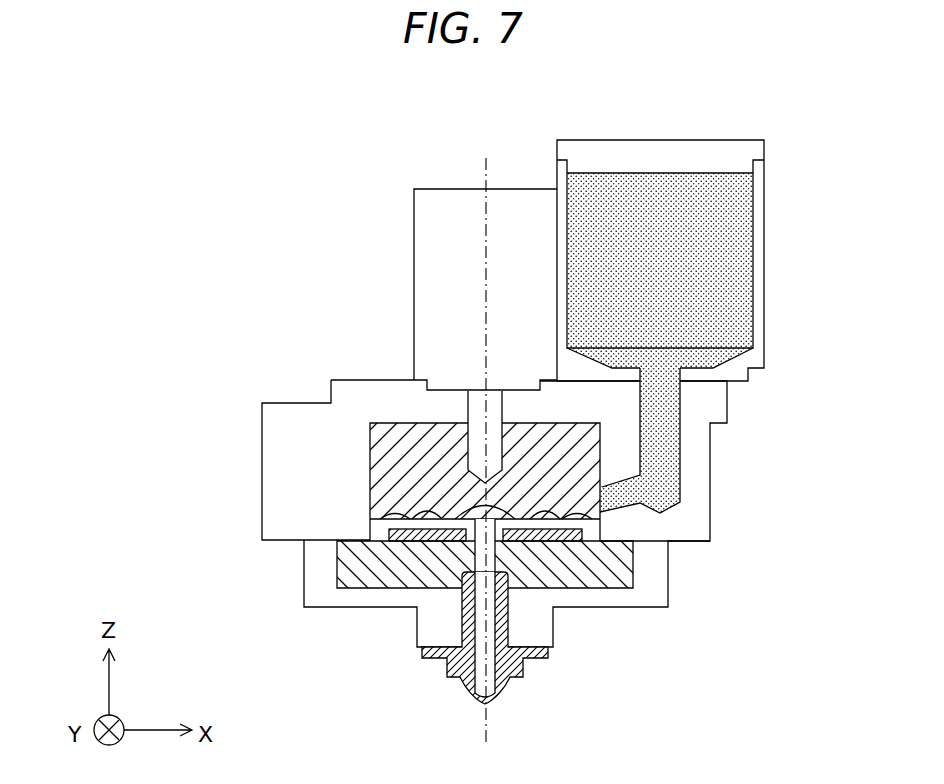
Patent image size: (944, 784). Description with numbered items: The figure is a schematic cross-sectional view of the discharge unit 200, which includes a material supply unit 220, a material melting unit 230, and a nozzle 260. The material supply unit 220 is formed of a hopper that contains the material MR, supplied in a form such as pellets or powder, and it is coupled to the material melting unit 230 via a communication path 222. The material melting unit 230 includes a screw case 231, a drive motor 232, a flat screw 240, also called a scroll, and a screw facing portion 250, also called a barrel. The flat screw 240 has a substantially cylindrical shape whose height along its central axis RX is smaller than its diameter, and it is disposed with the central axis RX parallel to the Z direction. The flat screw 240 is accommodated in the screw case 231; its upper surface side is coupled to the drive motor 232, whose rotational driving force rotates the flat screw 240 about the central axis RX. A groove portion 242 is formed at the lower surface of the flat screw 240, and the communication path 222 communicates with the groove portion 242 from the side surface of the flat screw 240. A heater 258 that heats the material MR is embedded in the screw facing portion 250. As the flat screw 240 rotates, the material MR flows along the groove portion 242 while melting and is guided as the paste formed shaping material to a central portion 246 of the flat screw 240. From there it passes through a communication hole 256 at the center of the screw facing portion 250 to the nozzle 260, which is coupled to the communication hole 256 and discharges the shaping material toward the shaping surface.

The discharge unit 200 is at (164, 182).
The material supply unit 220 is at (766, 253).
The material MR is at (731, 221).
The communication path 222 is at (658, 442).
The material melting unit 230 is at (312, 249).
The screw case 231 is at (378, 380).
The drive motor 232 is at (414, 218).
The flat screw 240 is at (393, 452).
The groove portion 242 is at (415, 508).
The central portion 246 is at (477, 505).
The screw facing portion 250 is at (350, 567).
The communication hole 256 is at (545, 562).
The heater 258 is at (560, 540).
The nozzle 260 is at (487, 703).
The central axis RX is at (485, 178).